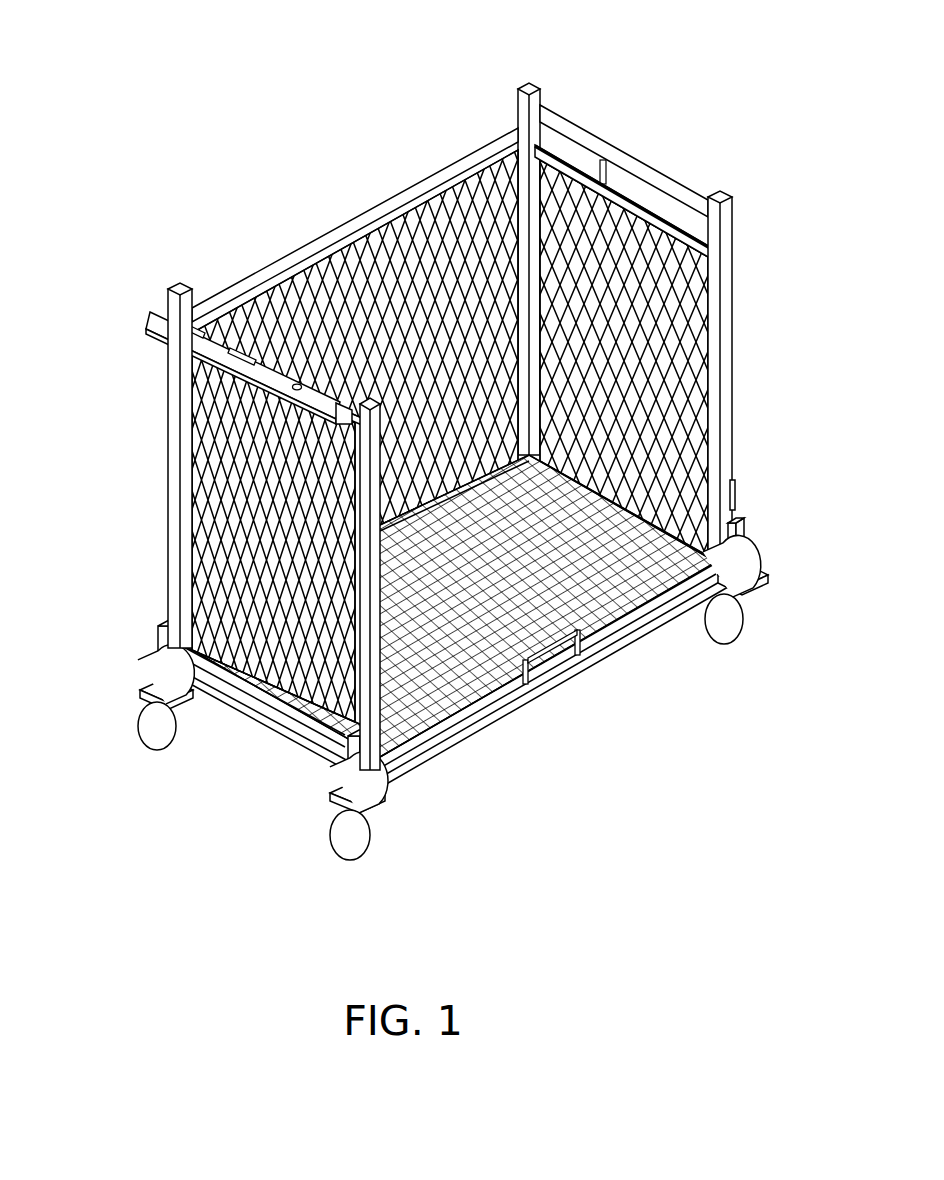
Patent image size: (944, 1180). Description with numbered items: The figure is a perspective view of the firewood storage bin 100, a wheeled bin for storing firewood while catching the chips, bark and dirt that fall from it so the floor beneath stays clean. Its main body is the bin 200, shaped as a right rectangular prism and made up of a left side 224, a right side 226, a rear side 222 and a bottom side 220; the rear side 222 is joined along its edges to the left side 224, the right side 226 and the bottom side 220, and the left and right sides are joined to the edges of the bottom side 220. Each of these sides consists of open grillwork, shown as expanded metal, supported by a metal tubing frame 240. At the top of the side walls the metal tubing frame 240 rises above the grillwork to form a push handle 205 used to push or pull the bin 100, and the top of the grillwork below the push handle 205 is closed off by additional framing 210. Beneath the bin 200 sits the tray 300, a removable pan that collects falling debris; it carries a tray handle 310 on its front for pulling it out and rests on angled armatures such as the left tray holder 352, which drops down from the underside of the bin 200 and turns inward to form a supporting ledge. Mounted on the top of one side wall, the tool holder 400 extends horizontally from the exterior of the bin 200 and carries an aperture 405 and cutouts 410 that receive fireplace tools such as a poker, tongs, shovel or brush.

The firewood storage bin 100 is at (262, 146).
The bin 200 is at (651, 20).
The push handle 205 is at (569, 118).
The additional framing 210 is at (612, 187).
The bottom side 220 is at (608, 582).
The rear side 222 is at (387, 258).
The left side 224 is at (208, 438).
The right side 226 is at (677, 317).
The metal tubing frame 240 is at (734, 396).
The tray 300 is at (521, 701).
The tray handle 310 is at (588, 648).
The left tray holder 352 is at (303, 752).
The tool holder 400 is at (150, 313).
The aperture 405 is at (298, 382).
The cutout 410 is at (205, 320).